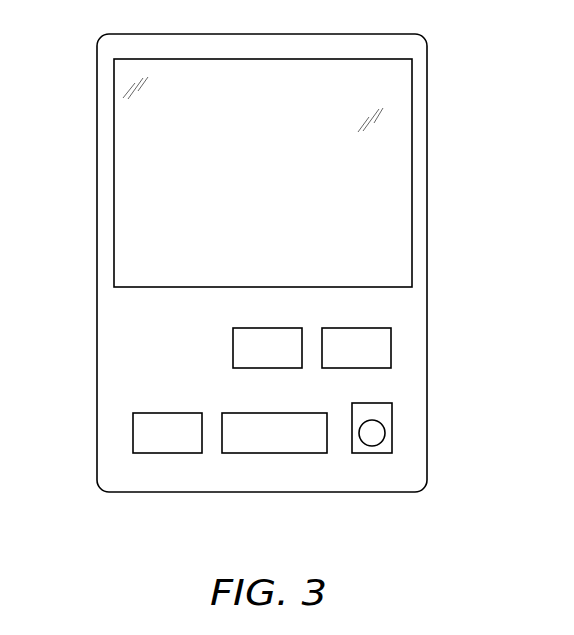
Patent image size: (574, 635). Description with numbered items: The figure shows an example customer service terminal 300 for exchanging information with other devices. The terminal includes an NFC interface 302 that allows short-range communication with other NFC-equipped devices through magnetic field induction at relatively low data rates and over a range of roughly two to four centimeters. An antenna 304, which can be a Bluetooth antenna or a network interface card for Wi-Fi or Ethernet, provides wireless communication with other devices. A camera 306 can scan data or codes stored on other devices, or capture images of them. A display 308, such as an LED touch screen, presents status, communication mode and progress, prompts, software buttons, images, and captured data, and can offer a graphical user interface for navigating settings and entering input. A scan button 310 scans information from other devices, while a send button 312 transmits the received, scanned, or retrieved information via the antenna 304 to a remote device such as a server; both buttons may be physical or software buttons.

The customer service terminal 300 is at (91, 172).
The NFC interface 302 is at (163, 453).
The antenna 304 is at (267, 453).
The camera 306 is at (372, 453).
The display 308 is at (402, 162).
The scan button 310 is at (233, 347).
The send button 312 is at (391, 349).